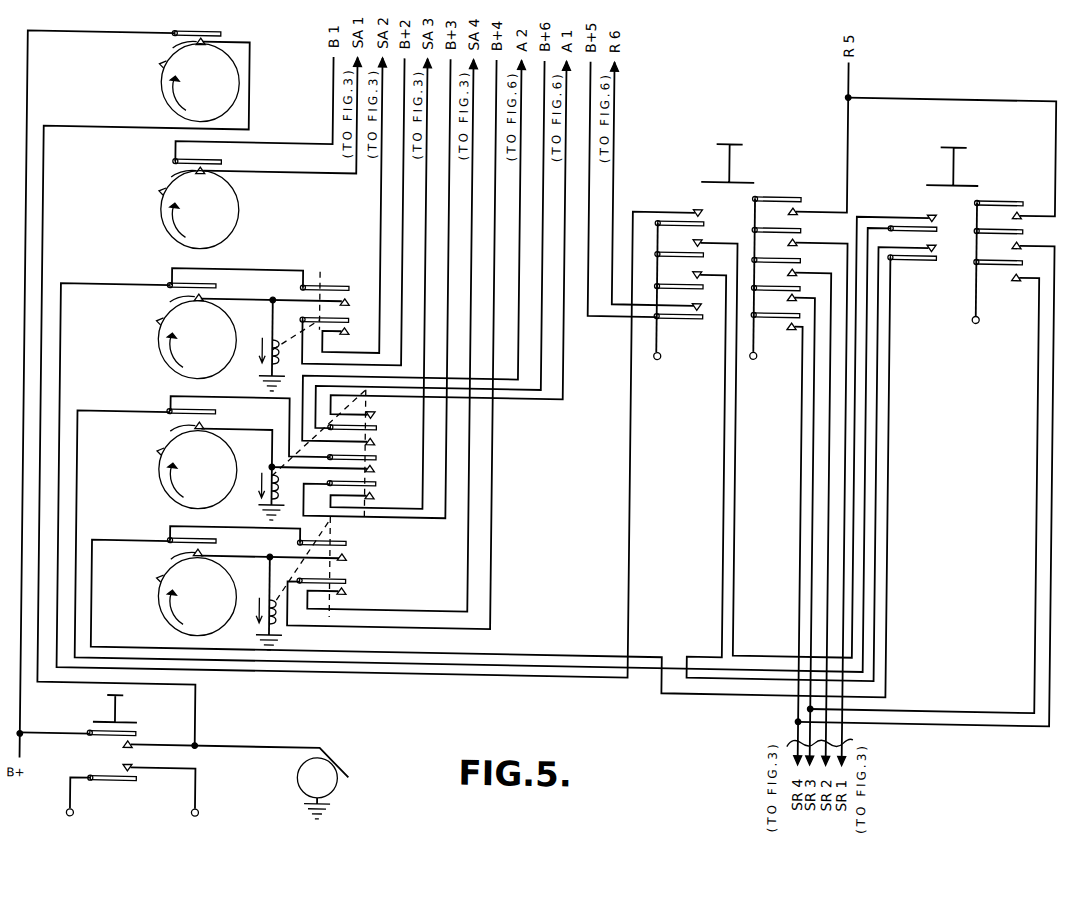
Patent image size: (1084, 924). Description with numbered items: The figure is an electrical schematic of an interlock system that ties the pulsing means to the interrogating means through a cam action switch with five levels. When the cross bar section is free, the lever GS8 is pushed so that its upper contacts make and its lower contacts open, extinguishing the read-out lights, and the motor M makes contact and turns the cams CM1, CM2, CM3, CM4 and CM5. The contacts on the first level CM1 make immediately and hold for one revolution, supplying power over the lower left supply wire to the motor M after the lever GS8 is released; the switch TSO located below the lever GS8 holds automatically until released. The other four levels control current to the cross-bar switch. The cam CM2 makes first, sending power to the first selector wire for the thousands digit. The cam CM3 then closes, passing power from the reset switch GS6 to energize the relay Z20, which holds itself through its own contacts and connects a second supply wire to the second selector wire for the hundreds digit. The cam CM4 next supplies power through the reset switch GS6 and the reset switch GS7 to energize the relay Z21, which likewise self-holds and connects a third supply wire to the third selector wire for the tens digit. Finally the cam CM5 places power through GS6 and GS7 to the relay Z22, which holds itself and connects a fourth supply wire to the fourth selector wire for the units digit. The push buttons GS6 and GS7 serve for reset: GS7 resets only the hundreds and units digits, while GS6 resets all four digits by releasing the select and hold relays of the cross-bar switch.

The first cam level CM1 is at (188, 72).
The cam CM2 is at (186, 198).
The cam CM3 is at (256, 326).
The cam CM4 is at (265, 456).
The cam CM5 is at (251, 583).
The relay Z20 is at (254, 345).
The relay Z21 is at (253, 493).
The relay Z22 is at (252, 603).
The reset push button switch GS6 is at (731, 251).
The reset push button switch GS7 is at (965, 234).
The lever switch GS8 is at (128, 725).
The switch TSO is at (114, 789).
The motor M is at (317, 789).